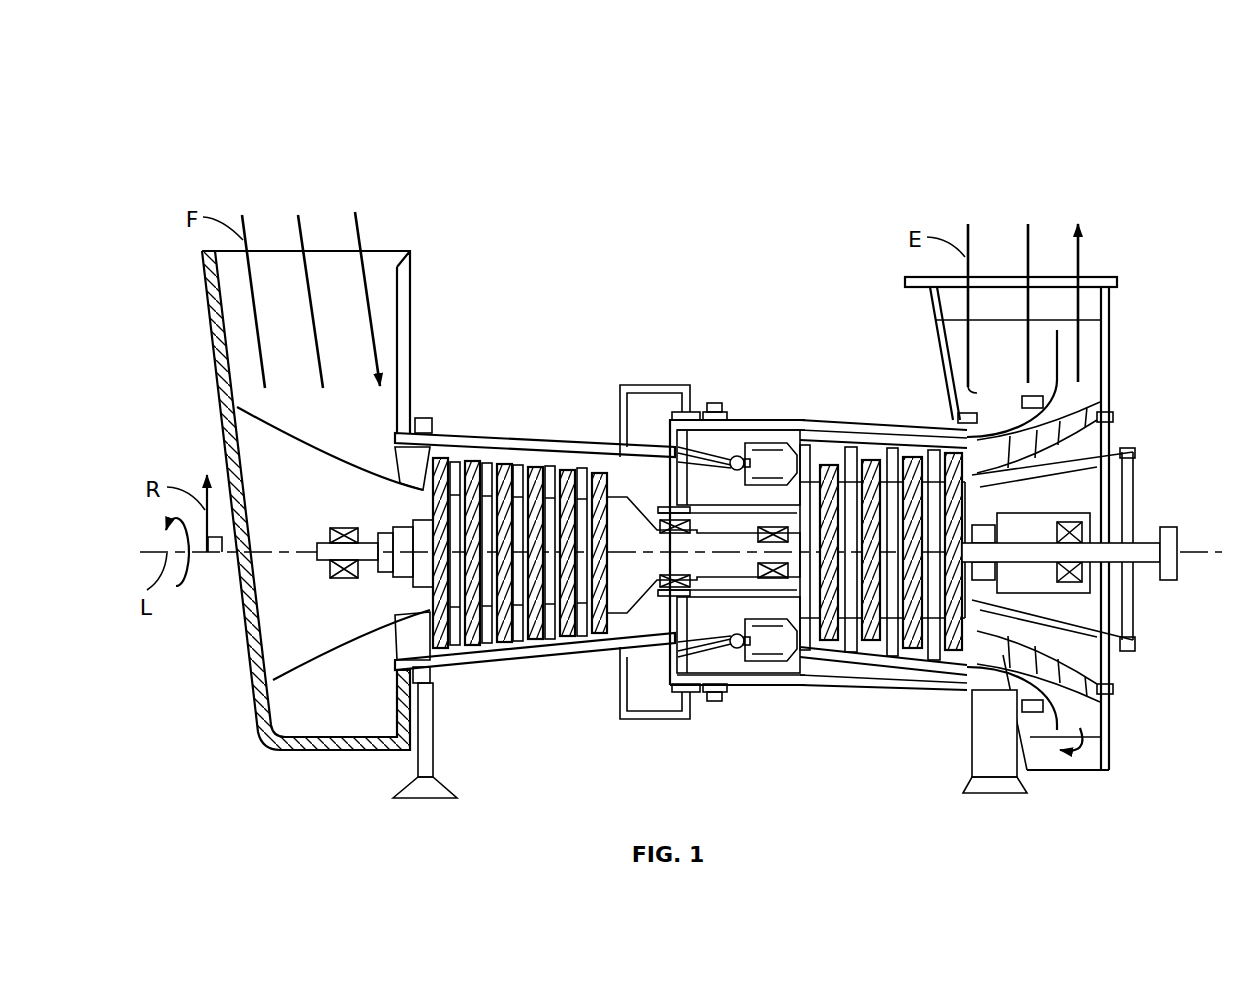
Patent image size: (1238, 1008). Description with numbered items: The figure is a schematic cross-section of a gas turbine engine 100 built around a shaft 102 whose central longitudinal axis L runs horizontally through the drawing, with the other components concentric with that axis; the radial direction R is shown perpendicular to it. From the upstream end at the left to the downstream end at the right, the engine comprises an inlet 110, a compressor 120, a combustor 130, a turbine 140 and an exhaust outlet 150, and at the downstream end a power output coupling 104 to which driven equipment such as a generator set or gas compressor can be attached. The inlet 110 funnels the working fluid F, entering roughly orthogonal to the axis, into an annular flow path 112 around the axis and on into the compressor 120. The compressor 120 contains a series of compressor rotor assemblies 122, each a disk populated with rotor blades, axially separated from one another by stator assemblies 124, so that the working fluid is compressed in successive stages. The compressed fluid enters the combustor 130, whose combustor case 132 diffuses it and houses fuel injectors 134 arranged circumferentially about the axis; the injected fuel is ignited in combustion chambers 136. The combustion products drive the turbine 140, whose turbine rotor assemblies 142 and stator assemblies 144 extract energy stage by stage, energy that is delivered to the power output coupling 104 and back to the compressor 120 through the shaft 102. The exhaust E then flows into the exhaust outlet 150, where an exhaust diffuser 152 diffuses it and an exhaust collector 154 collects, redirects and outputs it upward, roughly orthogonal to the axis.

The gas turbine engine 100 is at (168, 87).
The shaft 102 is at (323, 542).
The power output coupling 104 is at (1172, 526).
The inlet 110 is at (182, 153).
The annular flow path 112 is at (390, 451).
The compressor 120 is at (685, 153).
The compressor rotor assemblies 122 is at (508, 646).
The stator assemblies 124 is at (518, 465).
The combustor 130 is at (822, 153).
The combustor case 132 is at (756, 436).
The fuel injectors 134 is at (740, 445).
The combustion chambers 136 is at (773, 447).
The turbine 140 is at (1008, 153).
The turbine rotor assemblies 142 is at (954, 652).
The stator assemblies 144 is at (933, 450).
The exhaust outlet 150 is at (953, 190).
The exhaust diffuser 152 is at (1013, 417).
The exhaust collector 154 is at (930, 323).